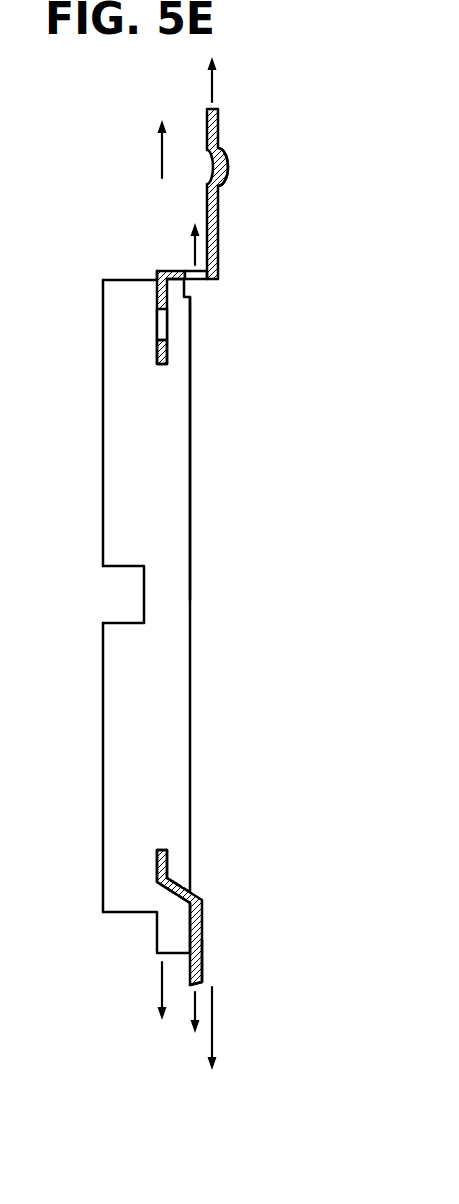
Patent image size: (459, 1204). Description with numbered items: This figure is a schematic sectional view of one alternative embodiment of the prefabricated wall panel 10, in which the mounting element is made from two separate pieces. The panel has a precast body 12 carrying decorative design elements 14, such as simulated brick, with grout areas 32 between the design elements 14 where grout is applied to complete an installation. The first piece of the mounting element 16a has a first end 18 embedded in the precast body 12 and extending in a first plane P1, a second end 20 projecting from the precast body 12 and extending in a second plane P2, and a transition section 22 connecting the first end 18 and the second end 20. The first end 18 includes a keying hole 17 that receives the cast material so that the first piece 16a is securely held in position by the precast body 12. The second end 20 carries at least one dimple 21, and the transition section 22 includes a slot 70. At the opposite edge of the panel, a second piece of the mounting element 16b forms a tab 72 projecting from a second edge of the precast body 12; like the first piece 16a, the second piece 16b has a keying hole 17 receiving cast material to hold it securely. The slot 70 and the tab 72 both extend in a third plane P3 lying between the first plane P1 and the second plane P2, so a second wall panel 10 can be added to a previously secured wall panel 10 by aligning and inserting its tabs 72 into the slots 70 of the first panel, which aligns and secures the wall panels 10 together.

The prefabricated wall panel 10 is at (264, 216).
The precast body 12 is at (175, 672).
The decorative design element 14 is at (101, 440).
The first piece of the mounting element 16a is at (186, 111).
The second piece of the mounting element 16b is at (208, 933).
The keying hole 17 is at (163, 331).
The first end 18 is at (168, 358).
The second end 20 is at (219, 241).
The dimple 21 is at (229, 162).
The transition section 22 is at (172, 271).
The grout area 32 is at (143, 594).
The slot 70 is at (193, 282).
The tab 72 is at (203, 969).
The first plane P1 is at (213, 83).
The second plane P2 is at (133, 1048).
The third plane P3 is at (160, 985).